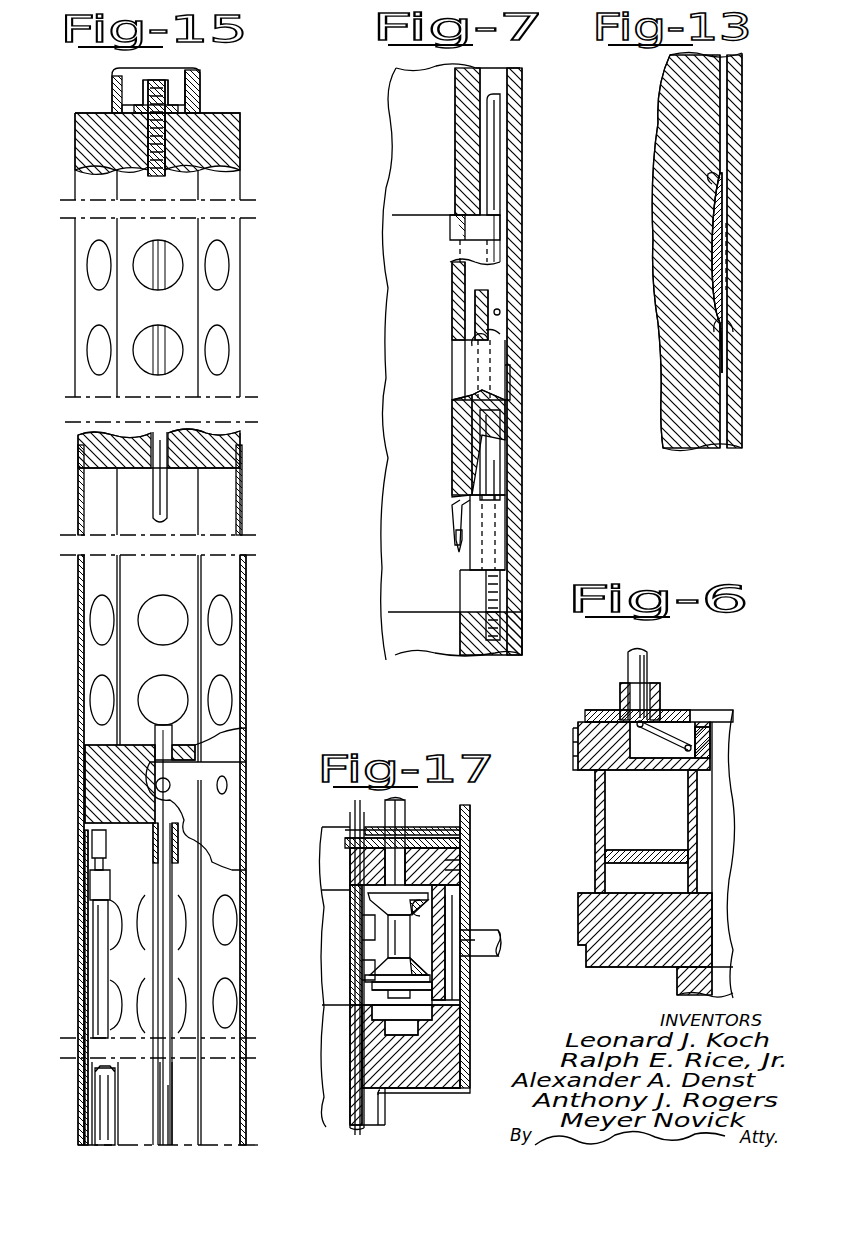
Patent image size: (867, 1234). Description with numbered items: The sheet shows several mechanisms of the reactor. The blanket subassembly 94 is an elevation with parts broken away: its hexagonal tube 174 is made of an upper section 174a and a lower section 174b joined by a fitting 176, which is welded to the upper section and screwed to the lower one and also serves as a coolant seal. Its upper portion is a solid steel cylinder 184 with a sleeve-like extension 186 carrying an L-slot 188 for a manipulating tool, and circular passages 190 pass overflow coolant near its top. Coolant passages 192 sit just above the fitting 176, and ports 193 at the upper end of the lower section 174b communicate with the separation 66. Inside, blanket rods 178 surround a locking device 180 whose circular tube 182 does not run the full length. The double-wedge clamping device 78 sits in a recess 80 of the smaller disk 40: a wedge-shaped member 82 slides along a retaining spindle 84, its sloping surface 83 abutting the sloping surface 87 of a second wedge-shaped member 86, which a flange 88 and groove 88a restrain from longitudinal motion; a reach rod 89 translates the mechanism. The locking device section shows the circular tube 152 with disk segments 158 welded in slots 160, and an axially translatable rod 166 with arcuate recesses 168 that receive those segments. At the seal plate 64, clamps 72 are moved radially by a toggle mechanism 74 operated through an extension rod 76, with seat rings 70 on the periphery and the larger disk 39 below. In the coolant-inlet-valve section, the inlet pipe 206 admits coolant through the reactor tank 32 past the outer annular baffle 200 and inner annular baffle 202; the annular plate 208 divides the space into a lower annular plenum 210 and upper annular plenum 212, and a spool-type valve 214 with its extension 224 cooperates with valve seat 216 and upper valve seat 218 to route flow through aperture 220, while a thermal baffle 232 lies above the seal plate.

In FIG. 15, the L-slot 188 is at (118, 99).
In FIG. 15, the sleeve-like extension 186 is at (199, 98).
In FIG. 15, the solid steel cylinder 184 is at (91, 183).
In FIG. 15, the blanket subassembly 94 is at (260, 158).
In FIG. 15, the circular passages 190 is at (213, 332).
In FIG. 15, the upper section of tube 174a is at (80, 516).
In FIG. 15, the hexagonal tube 174 is at (80, 673).
In FIG. 15, the coolant passages 192 is at (180, 697).
In FIG. 15, the fitting 176 is at (100, 785).
In FIG. 15, the circular tube 182 is at (160, 883).
In FIG. 15, the lower section of tube 174b is at (88, 959).
In FIG. 15, the ports 193 is at (152, 938).
In FIG. 15, the locking device 180 is at (160, 1032).
In FIG. 15, the blanket rods 178 is at (100, 1113).
In FIG. 7, the reach rod 89 is at (496, 122).
In FIG. 17, the reach rod 89 is at (362, 1137).
In FIG. 7, the smaller disk 40 is at (522, 143).
In FIG. 6, the smaller disk 40 is at (718, 986).
In FIG. 17, the smaller disk 40 is at (350, 1103).
In FIG. 7, the horizontally extending groove 88a is at (472, 215).
In FIG. 7, the flange 88 is at (470, 228).
In FIG. 7, the second wedge-shaped member 86 is at (456, 284).
In FIG. 7, the double-wedge type clamping device 78 is at (447, 352).
In FIG. 7, the recess 80 is at (515, 396).
In FIG. 7, the sloping surface 83 is at (471, 531).
In FIG. 7, the sloping surface 87 is at (455, 537).
In FIG. 7, the wedge-shaped member 82 is at (495, 546).
In FIG. 7, the retaining spindle 84 is at (490, 582).
In FIG. 13, the arcuate-shaped recesses 168 is at (716, 177).
In FIG. 13, the segments of circular disks 158 is at (728, 257).
In FIG. 13, the axially translatable rod 166 is at (673, 297).
In FIG. 13, the slots 160 is at (730, 326).
In FIG. 13, the circular tube 152 is at (735, 398).
In FIG. 6, the extension rod 76 is at (643, 670).
In FIG. 6, the seal plate 64 is at (585, 720).
In FIG. 17, the seal plate 64 is at (460, 845).
In FIG. 6, the seat rings 70 is at (629, 746).
In FIG. 17, the seat rings 70 is at (460, 873).
In FIG. 6, the clamps 72 is at (710, 746).
In FIG. 6, the toggle mechanism 74 is at (663, 743).
In FIG. 6, the outer annular baffle 200 is at (595, 798).
In FIG. 17, the outer annular baffle 200 is at (445, 896).
In FIG. 6, the inner annular baffle 202 is at (697, 801).
In FIG. 17, the inner annular baffle 202 is at (355, 929).
In FIG. 6, the upper annular plenum 212 is at (666, 827).
In FIG. 17, the upper annular plenum 212 is at (368, 906).
In FIG. 6, the horizontally-disposed annular plate 208 is at (682, 857).
In FIG. 17, the horizontally-disposed annular plate 208 is at (370, 968).
In FIG. 6, the lower annular plenum 210 is at (666, 887).
In FIG. 17, the lower annular plenum 210 is at (428, 995).
In FIG. 6, the larger disk 39 is at (648, 953).
In FIG. 17, the larger disk 39 is at (435, 1078).
In FIG. 17, the upwardly extending extension 224 is at (405, 814).
In FIG. 17, the reactor tank 32 is at (470, 820).
In FIG. 17, the thermal baffle 232 is at (456, 830).
In FIG. 17, the upper valve seat 218 is at (445, 912).
In FIG. 17, the aperture 220 is at (452, 932).
In FIG. 17, the inlet pipe 206 is at (498, 942).
In FIG. 17, the separation 66 is at (454, 966).
In FIG. 17, the valve seat 216 is at (428, 978).
In FIG. 17, the spool-type valve 214 is at (392, 947).